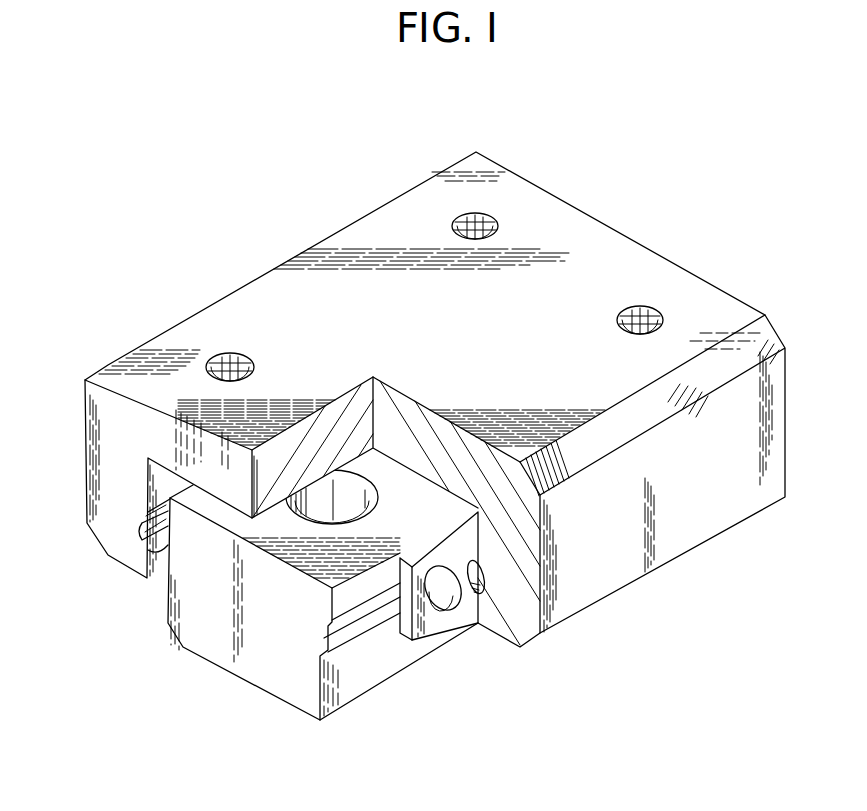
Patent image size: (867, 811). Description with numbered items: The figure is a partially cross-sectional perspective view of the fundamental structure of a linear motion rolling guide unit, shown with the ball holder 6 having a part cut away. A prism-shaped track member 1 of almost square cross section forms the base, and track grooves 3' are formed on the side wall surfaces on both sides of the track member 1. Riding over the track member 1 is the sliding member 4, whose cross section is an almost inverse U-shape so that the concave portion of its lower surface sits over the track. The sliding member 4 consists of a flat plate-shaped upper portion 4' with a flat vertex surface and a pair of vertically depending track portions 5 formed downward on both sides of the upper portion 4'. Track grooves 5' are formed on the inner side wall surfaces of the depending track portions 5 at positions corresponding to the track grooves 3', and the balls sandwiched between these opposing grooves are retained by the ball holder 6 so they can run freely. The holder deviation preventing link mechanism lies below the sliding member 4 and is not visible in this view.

The track member 1 is at (245, 643).
The track grooves 3' is at (269, 599).
The sliding member 4 is at (432, 390).
The upper portion 4' is at (429, 309).
The vertically depending track portions 5 is at (407, 479).
The track grooves 5' is at (314, 550).
The ball holder 6 is at (432, 617).